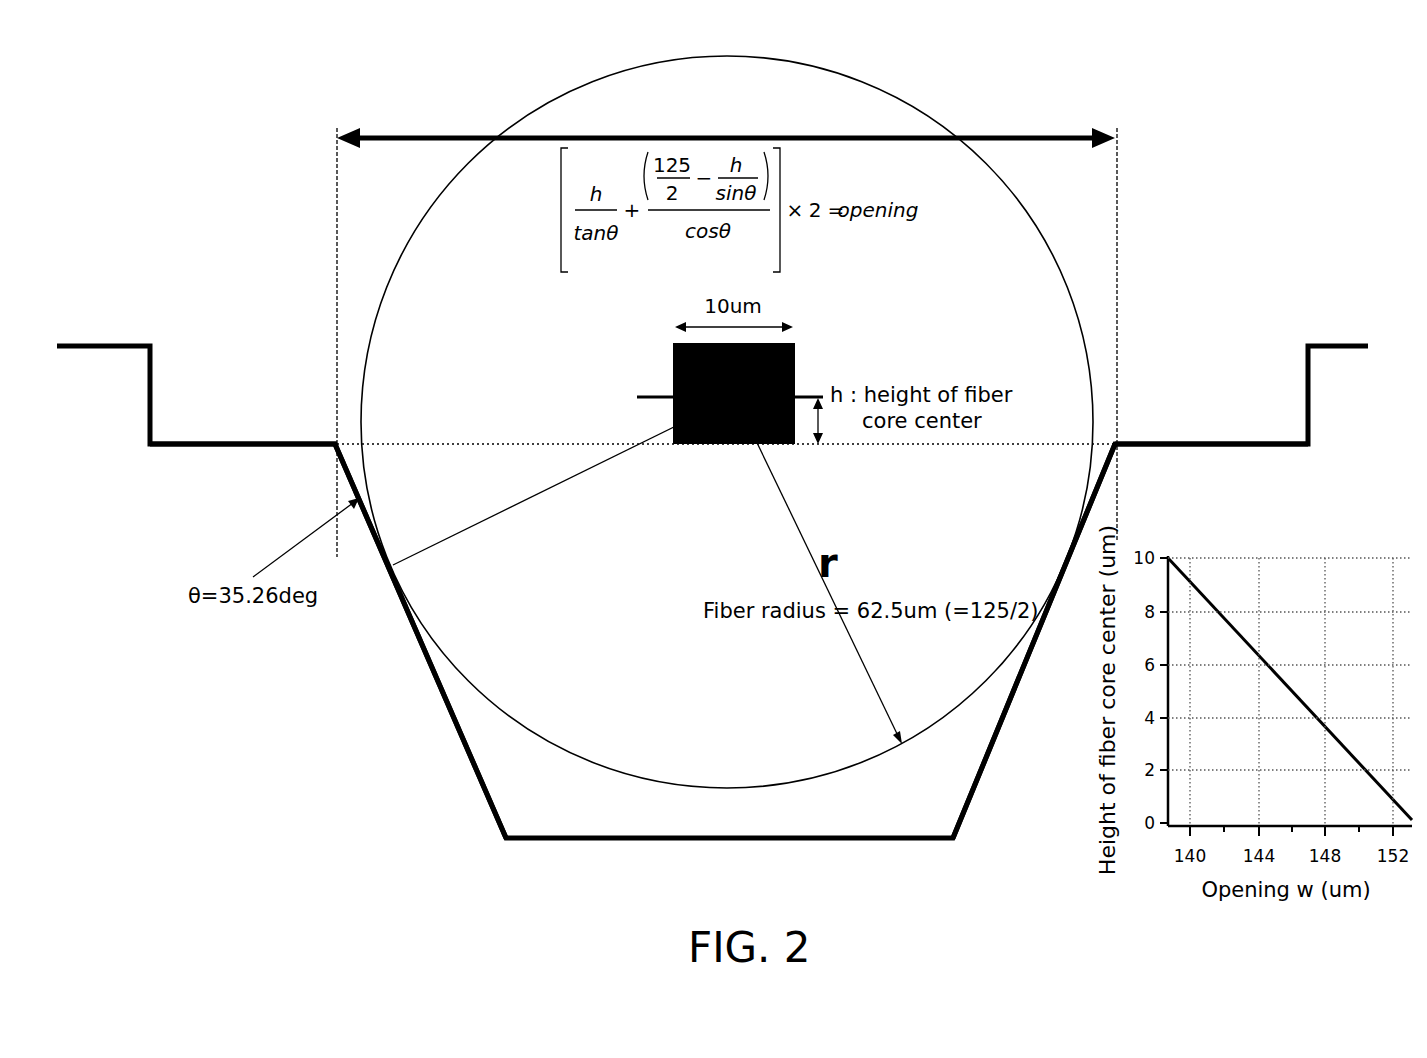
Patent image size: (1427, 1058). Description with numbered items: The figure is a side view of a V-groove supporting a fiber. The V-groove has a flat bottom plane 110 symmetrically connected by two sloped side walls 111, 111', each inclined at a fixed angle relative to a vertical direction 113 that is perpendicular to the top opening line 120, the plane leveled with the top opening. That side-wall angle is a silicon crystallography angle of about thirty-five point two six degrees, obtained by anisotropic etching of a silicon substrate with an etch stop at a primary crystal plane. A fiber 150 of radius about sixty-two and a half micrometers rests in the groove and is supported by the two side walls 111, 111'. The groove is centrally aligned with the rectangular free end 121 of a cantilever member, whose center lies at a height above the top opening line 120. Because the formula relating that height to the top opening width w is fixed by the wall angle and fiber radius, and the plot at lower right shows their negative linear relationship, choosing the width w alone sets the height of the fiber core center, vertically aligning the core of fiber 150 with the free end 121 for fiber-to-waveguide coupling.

The flat bottom plane 110 is at (870, 840).
The sloped side wall 111 is at (389, 641).
The sloped side wall 111' is at (1120, 641).
The vertical direction 113 is at (337, 305).
The top opening line 120 is at (1045, 444).
The free end of cantilever member 121 is at (688, 365).
The fiber 150 is at (1063, 287).
The top opening width w is at (1014, 137).